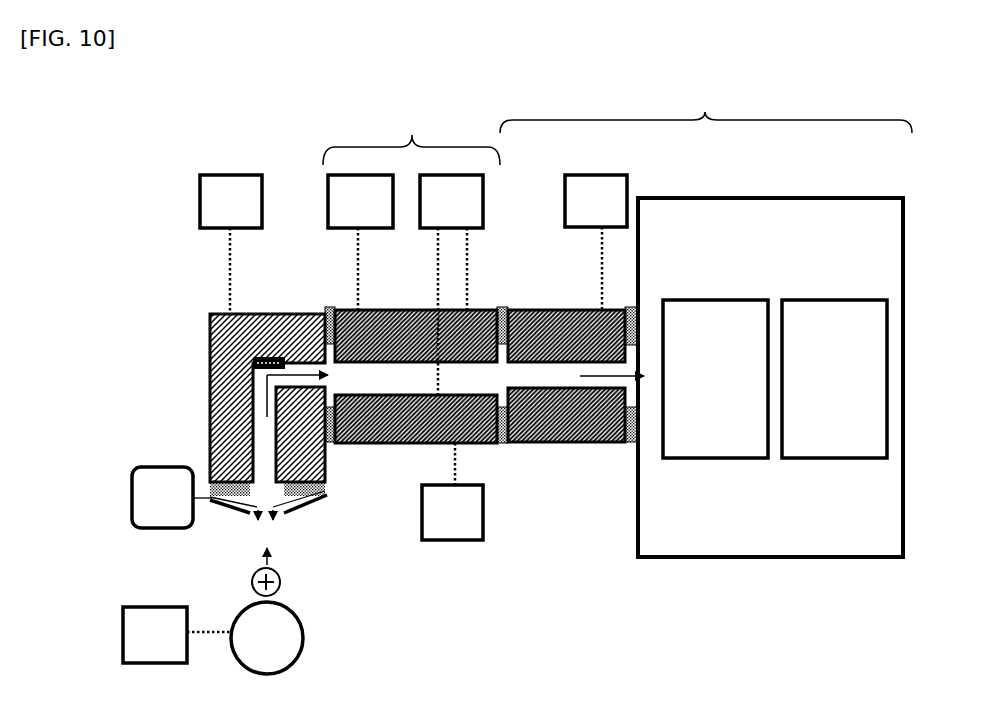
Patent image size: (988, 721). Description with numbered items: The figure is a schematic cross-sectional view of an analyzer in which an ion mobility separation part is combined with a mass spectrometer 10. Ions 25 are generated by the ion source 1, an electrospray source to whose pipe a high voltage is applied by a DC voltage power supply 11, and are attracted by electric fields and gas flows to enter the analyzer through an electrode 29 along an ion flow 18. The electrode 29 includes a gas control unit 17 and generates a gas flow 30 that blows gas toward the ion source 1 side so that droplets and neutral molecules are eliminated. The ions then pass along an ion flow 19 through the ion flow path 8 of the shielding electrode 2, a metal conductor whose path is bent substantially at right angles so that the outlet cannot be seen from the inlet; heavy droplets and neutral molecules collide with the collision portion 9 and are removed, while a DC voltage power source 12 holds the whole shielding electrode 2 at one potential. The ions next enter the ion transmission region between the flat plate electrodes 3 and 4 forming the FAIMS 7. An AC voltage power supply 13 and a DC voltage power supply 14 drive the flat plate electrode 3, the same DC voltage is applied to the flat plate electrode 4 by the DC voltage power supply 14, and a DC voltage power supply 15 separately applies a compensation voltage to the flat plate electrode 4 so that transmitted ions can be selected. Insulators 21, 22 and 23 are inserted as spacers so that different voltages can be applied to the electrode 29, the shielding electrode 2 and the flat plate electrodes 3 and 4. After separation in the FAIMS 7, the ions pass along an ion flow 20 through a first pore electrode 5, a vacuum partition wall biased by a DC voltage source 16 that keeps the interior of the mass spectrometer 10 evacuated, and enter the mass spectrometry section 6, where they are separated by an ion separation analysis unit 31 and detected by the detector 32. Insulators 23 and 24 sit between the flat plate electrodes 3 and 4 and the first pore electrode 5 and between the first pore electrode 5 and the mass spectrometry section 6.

The ion source 1 is at (267, 638).
The shielding electrode 2 is at (260, 312).
The flat plate electrode 3 is at (392, 310).
The flat plate electrode 4 is at (400, 444).
The first pore electrode 5 is at (558, 310).
The mass spectrometry section 6 is at (818, 198).
The FAIMS 7 is at (411, 134).
The ion flow path 8 is at (265, 433).
The collision portion 9 is at (250, 382).
The mass spectrometer 10 is at (706, 105).
The DC voltage power supply 11 is at (177, 635).
The DC voltage power source 12 is at (231, 243).
The AC voltage power supply 13 is at (360, 242).
The DC voltage power supply 14 is at (451, 285).
The DC voltage power supply 15 is at (452, 491).
The DC voltage source 16 is at (596, 242).
The gas control unit 17 is at (172, 497).
The ion flow 18 is at (270, 555).
The ion flow 19 is at (290, 356).
The ion flow 20 is at (606, 378).
The insulator 21 is at (327, 488).
The insulator 22 is at (330, 306).
The insulator 23 is at (502, 306).
The insulator 24 is at (630, 306).
The ions 25 is at (281, 585).
The electrode 29 is at (302, 510).
The gas flow 30 is at (255, 526).
The ion separation analysis unit 31 is at (715, 379).
The detector 32 is at (834, 379).